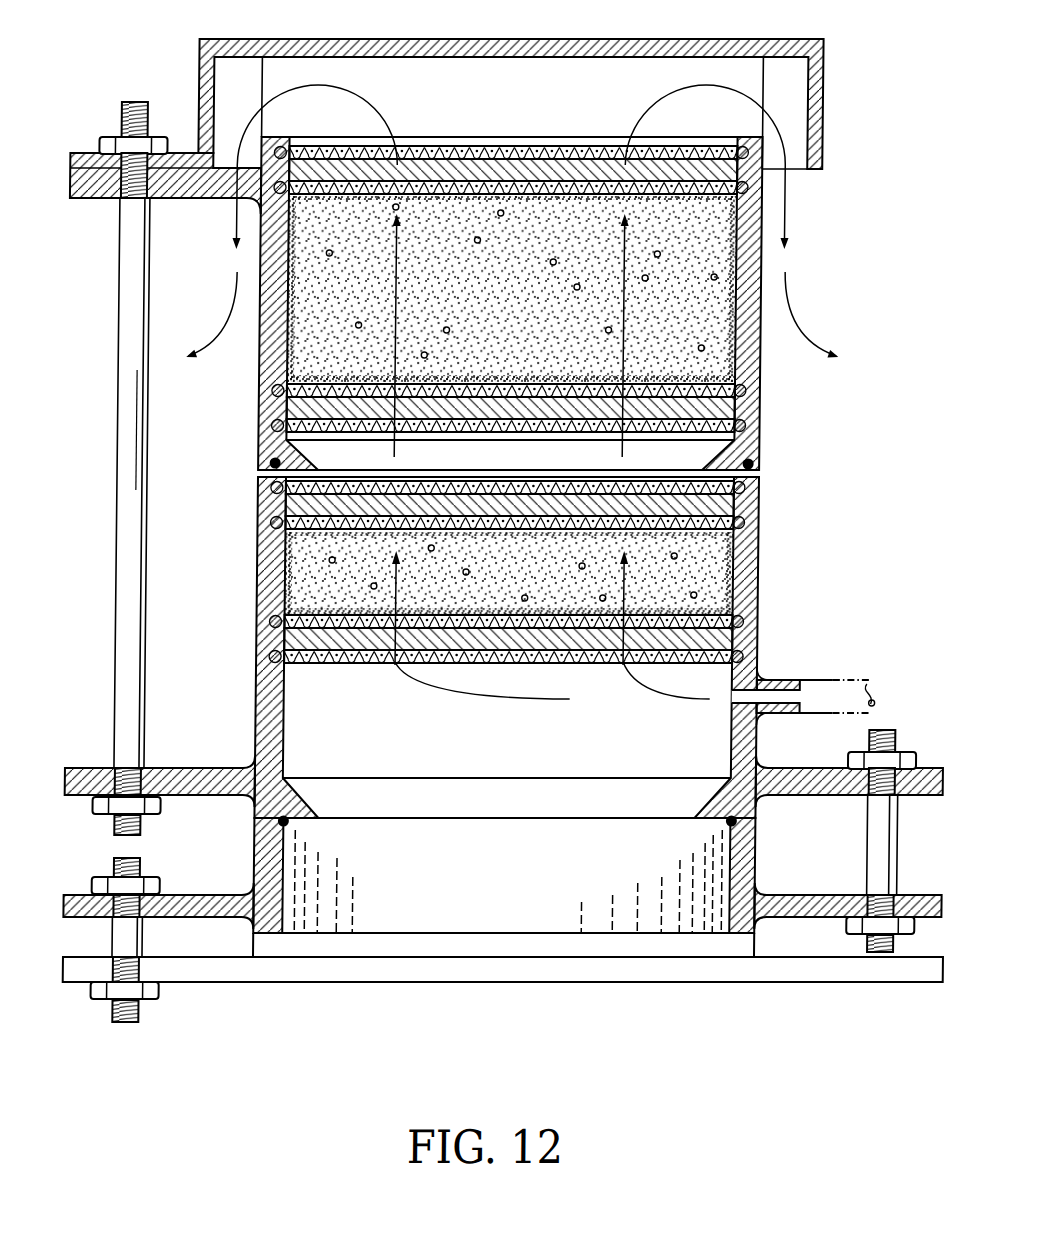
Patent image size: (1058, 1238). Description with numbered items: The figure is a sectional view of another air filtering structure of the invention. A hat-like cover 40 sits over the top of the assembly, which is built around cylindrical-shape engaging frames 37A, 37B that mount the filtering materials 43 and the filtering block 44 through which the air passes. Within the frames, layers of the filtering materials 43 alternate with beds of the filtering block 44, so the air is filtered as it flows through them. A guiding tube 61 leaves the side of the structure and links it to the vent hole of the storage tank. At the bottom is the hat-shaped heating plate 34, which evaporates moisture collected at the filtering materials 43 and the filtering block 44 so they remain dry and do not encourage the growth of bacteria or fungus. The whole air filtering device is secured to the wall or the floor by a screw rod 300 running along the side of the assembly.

The hat-like cover 40 is at (533, 42).
The filtering materials 43 is at (737, 160).
The filtering block 44 is at (718, 278).
The engaging frame 37A is at (266, 348).
The engaging frame 37B is at (267, 591).
The screw rod 300 is at (127, 458).
The guiding tube 61 is at (855, 690).
The heating plate 34 is at (486, 905).